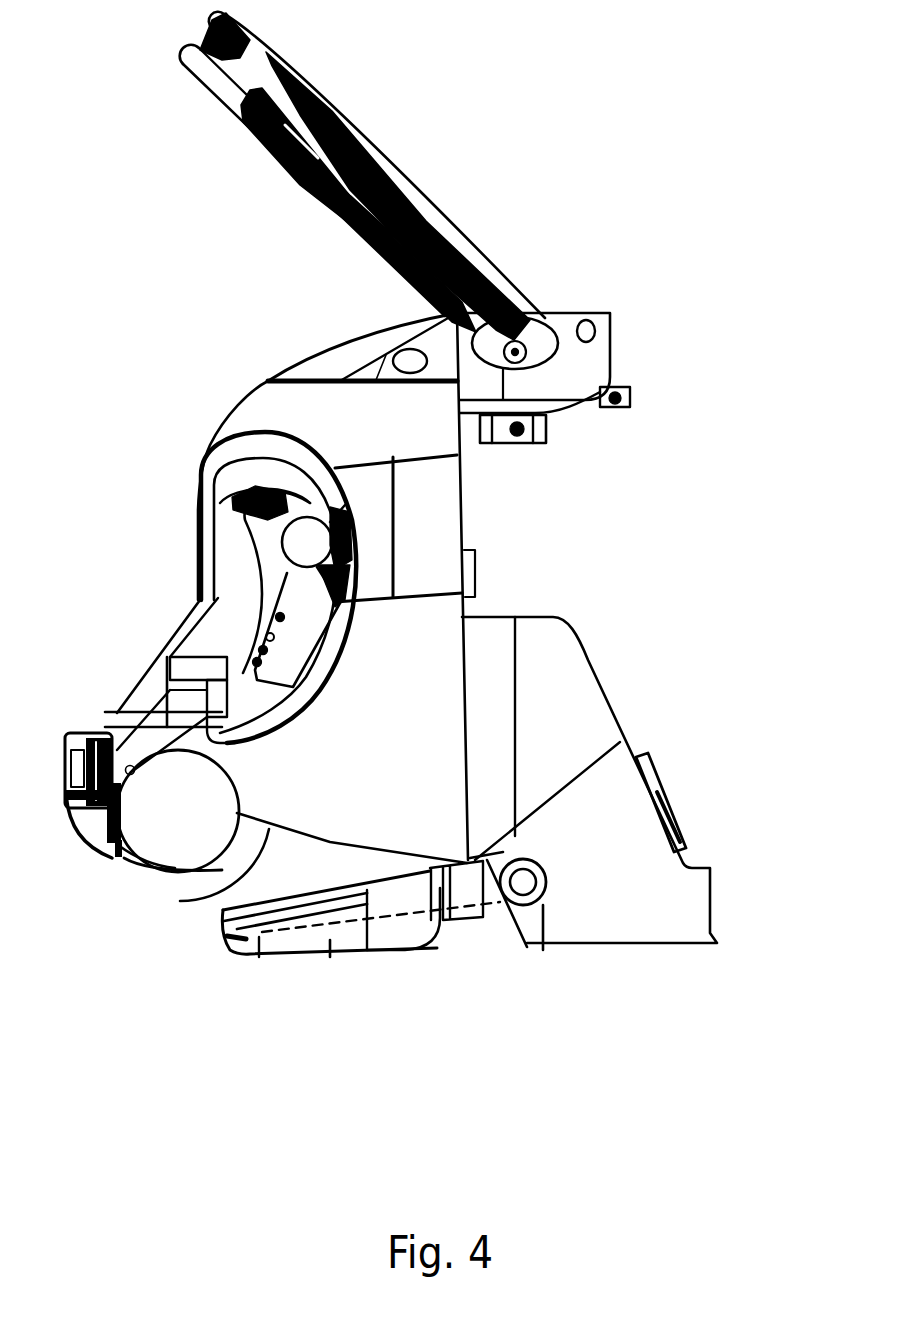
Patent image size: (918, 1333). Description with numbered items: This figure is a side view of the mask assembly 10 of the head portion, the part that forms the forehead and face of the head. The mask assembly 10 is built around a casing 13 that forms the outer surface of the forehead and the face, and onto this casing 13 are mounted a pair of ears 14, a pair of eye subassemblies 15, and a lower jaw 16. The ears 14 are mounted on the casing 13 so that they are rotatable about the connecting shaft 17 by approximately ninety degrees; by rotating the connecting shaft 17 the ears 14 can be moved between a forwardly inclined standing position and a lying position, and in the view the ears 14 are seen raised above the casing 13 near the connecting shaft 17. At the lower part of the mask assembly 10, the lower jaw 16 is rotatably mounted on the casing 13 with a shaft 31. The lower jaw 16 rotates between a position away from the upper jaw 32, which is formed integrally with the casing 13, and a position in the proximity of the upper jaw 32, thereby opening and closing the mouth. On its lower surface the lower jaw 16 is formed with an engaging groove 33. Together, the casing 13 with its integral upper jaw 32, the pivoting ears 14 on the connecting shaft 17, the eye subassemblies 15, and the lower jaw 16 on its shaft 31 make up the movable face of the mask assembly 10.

The mask assembly 10 is at (556, 290).
The casing 13 is at (230, 414).
The ears 14 is at (180, 50).
The eye subassemblies 15 is at (198, 558).
The lower jaw 16 is at (250, 957).
The connecting shaft 17 is at (514, 447).
The shaft 31 is at (542, 950).
The upper jaw 32 is at (247, 868).
The engaging groove 33 is at (331, 946).